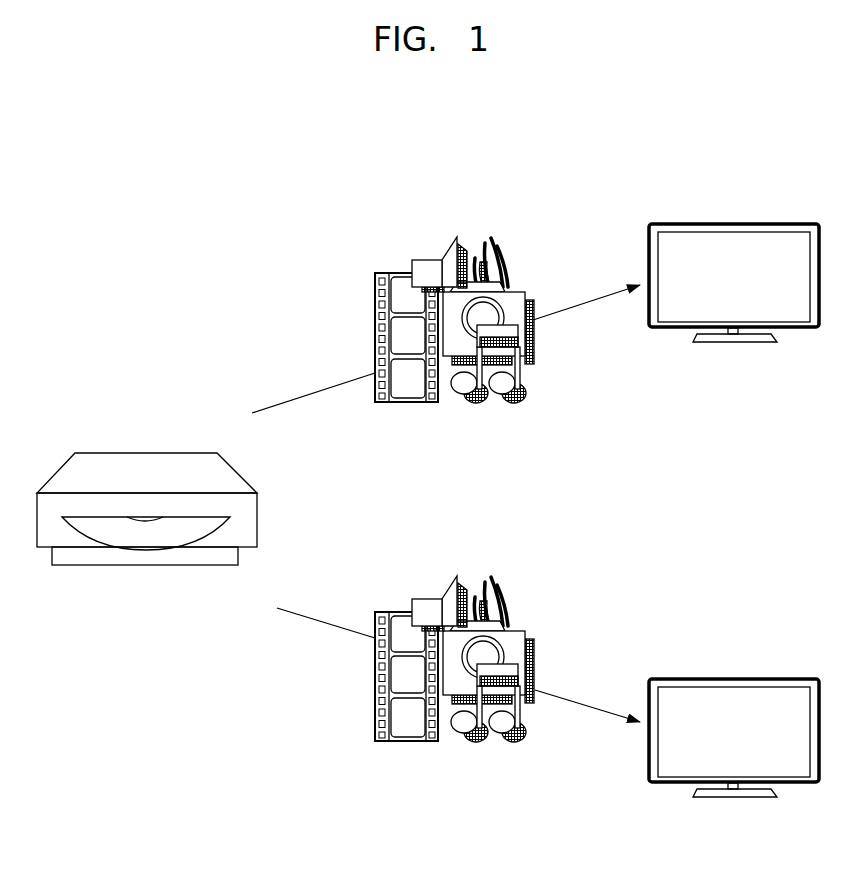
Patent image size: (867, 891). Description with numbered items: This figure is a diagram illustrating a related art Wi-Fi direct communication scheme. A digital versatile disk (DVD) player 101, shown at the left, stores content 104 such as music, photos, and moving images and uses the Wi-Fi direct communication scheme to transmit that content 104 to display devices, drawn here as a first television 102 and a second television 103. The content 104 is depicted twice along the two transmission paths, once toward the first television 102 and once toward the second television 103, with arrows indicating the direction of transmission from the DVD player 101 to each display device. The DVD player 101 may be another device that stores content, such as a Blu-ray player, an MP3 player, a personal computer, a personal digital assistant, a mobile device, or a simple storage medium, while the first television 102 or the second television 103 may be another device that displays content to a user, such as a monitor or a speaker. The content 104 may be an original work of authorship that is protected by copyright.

The digital versatile disk (DVD) player 101 is at (147, 565).
The TV1 102 is at (735, 223).
The TV2 103 is at (735, 678).
The content 104 is at (427, 258).